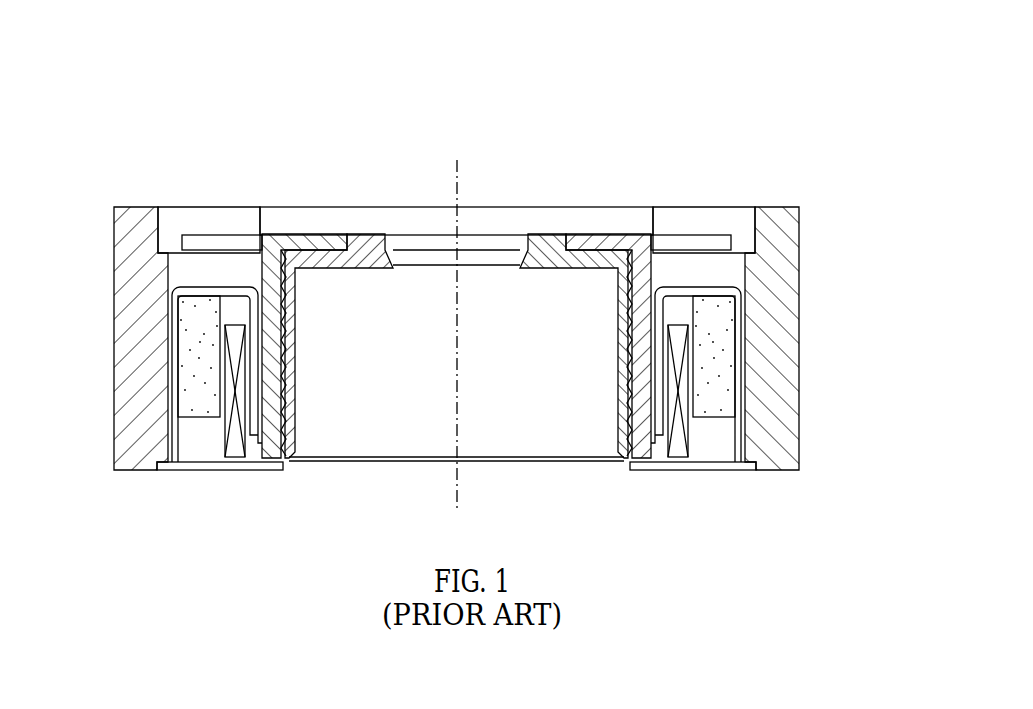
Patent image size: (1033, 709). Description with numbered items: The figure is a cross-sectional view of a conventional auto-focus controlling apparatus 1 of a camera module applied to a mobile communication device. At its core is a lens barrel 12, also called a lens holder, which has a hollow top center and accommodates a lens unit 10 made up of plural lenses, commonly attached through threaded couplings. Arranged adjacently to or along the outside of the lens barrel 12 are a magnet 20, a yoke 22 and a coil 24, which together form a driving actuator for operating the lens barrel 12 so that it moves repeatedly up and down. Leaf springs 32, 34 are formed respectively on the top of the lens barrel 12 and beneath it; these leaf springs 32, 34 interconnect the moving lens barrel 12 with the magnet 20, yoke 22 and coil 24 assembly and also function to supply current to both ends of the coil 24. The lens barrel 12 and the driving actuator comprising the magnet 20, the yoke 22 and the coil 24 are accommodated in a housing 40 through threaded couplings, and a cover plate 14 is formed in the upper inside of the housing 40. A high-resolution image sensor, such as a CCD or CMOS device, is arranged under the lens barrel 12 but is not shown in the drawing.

The auto-focus controlling apparatus 1 is at (752, 80).
The lens unit 10 is at (372, 234).
The lens barrel 12 is at (643, 446).
The cover plate 14 is at (715, 222).
The magnet 20 is at (180, 362).
The yoke 22 is at (173, 292).
The coil 24 is at (683, 452).
The leaf spring 32 is at (174, 242).
The leaf spring 34 is at (205, 471).
The housing 40 is at (799, 333).